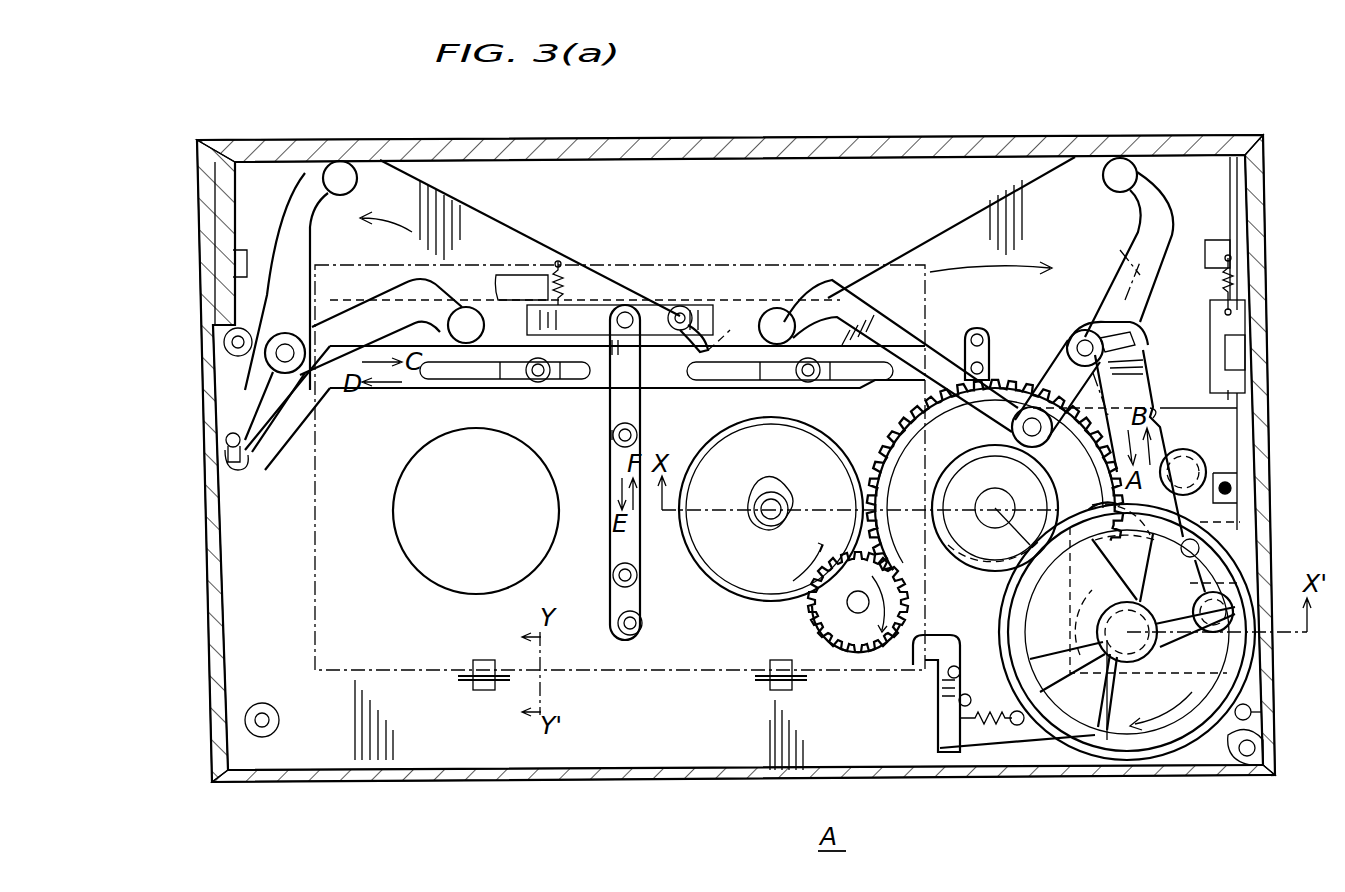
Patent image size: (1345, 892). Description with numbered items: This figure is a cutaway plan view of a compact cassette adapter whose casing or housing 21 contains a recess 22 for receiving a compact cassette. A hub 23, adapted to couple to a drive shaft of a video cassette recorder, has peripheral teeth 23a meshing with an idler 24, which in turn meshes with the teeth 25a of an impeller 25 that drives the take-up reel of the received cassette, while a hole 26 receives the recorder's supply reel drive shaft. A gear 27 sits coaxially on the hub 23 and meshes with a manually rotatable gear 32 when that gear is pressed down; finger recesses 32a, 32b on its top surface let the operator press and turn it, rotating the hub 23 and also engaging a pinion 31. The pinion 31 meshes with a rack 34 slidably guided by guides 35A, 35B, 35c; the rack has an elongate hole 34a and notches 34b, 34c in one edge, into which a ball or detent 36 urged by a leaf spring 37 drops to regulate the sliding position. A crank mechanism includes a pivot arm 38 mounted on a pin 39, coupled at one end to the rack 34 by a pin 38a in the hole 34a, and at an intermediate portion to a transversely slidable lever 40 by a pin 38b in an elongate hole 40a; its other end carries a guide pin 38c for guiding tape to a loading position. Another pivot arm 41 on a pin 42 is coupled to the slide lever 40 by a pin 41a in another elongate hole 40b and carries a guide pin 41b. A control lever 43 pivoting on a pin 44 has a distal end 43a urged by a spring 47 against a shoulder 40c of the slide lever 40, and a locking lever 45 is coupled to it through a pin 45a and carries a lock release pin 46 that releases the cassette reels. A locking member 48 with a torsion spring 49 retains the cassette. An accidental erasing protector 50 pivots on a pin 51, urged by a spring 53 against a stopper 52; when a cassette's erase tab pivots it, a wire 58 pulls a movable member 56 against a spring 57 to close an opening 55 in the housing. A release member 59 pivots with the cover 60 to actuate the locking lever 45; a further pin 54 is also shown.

The casing or housing 21 is at (625, 785).
The recess 22 is at (612, 670).
The hub 23 is at (905, 422).
The teeth 23a is at (890, 462).
The idler 24 is at (840, 638).
The impeller 25 is at (790, 578).
The teeth 25a is at (758, 590).
The hole or aperture 26 is at (408, 555).
The gear 27 is at (990, 560).
The pinion 31 is at (1086, 690).
The manually rotatable gear 32 is at (1140, 765).
The recess 32a is at (1042, 655).
The recess 32b is at (1180, 745).
The rack 34 is at (1148, 400).
The elongate hole 34a is at (1130, 338).
The notch 34b is at (1168, 612).
The notch 34c is at (1160, 420).
The guide 35A is at (1245, 584).
The guide 35B is at (1100, 502).
The guide 35c is at (1208, 462).
The ball or detent 36 is at (1250, 552).
The leaf spring 37 is at (1245, 517).
The pivot arm 38 is at (905, 318).
The pin 38a is at (1080, 332).
The pin 38b is at (990, 374).
The guide pin 38c is at (778, 310).
The pin 39 is at (1012, 428).
The slide lever 40 is at (592, 388).
The elongate hole 40a is at (985, 322).
The elongate hole 40b is at (240, 468).
The projection or shoulder 40c is at (660, 388).
The pivot arm 41 is at (385, 300).
The pin 41a is at (225, 438).
The guide pin 41b is at (462, 310).
The pin 42 is at (295, 350).
The control lever 43 is at (648, 303).
The distal end 43a is at (721, 328).
The pin 44 is at (683, 305).
The locking lever 45 is at (612, 548).
The pin 45a is at (630, 308).
The lock release pin 46 is at (643, 623).
The spring 47 is at (562, 275).
The locking member 48 is at (478, 660).
The torsion spring 49 is at (486, 690).
The accidental erasing protector 50 is at (940, 742).
The pin 51 is at (930, 668).
The stopper 52 is at (972, 669).
The spring 53 is at (991, 703).
The pin 54 is at (1262, 712).
The opening 55 is at (1245, 367).
The movable member 56 is at (1248, 327).
The spring 57 is at (1240, 289).
The wire 58 is at (1005, 765).
The release member 59 is at (525, 290).
The cover 60 is at (676, 140).